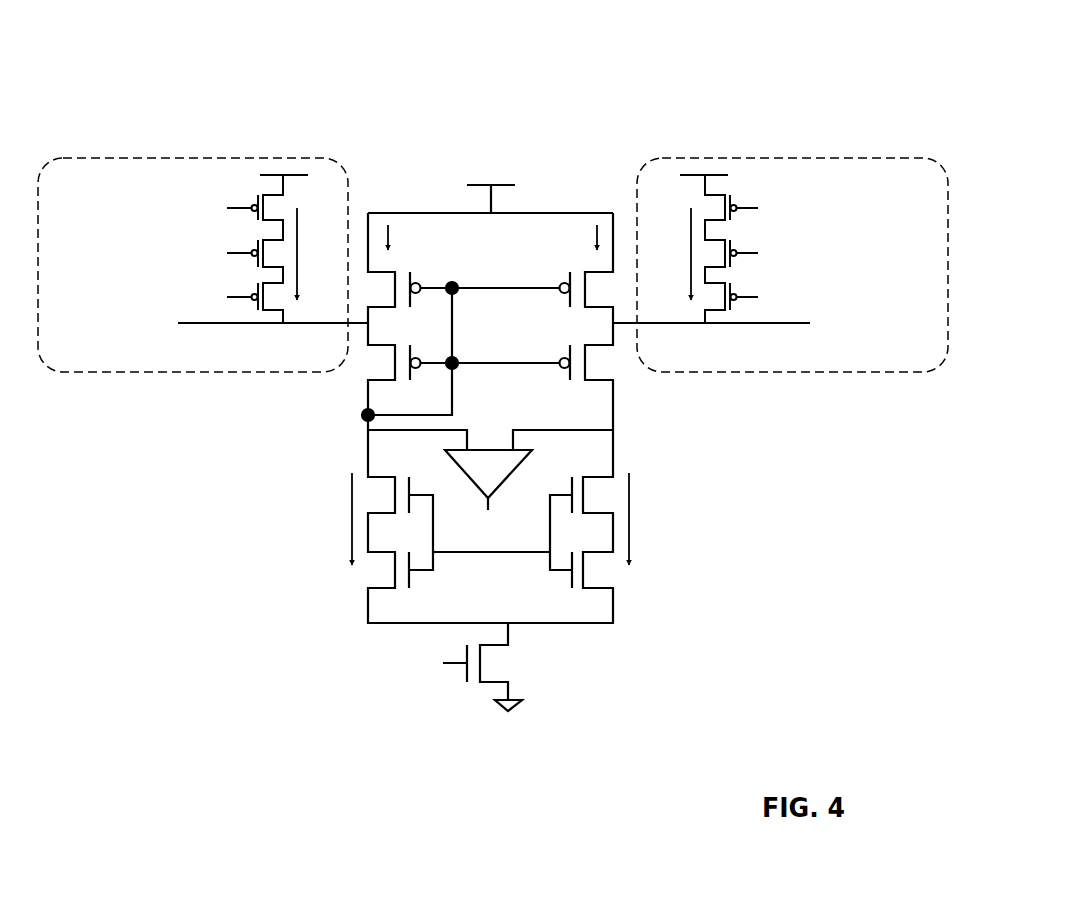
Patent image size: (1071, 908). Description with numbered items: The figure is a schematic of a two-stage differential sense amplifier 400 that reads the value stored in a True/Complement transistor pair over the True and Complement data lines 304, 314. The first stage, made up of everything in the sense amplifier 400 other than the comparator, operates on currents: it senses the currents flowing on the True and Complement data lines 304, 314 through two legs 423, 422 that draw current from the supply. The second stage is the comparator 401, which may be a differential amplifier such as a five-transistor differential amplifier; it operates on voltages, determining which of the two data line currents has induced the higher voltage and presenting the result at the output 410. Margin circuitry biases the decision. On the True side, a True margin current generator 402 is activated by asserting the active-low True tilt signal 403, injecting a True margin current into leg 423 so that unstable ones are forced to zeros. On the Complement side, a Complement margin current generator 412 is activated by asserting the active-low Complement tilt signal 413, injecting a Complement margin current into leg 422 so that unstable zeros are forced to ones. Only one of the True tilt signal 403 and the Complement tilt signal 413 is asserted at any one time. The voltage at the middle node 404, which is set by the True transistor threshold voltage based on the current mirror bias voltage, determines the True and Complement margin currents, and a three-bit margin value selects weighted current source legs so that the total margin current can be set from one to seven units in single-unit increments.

The differential sense amplifier 400 is at (118, 52).
The comparator 401 is at (512, 472).
The True margin current generator 402 is at (108, 158).
The signal TILT0N 403 is at (243, 297).
The MID node 404 is at (367, 420).
The output OUT 410 is at (490, 503).
The Complement margin current generator 412 is at (708, 158).
The signal TILT1N 413 is at (750, 295).
The leg 422 is at (613, 393).
The leg 423 is at (368, 387).
The True data line 304 is at (243, 325).
The Complement data line 314 is at (798, 325).